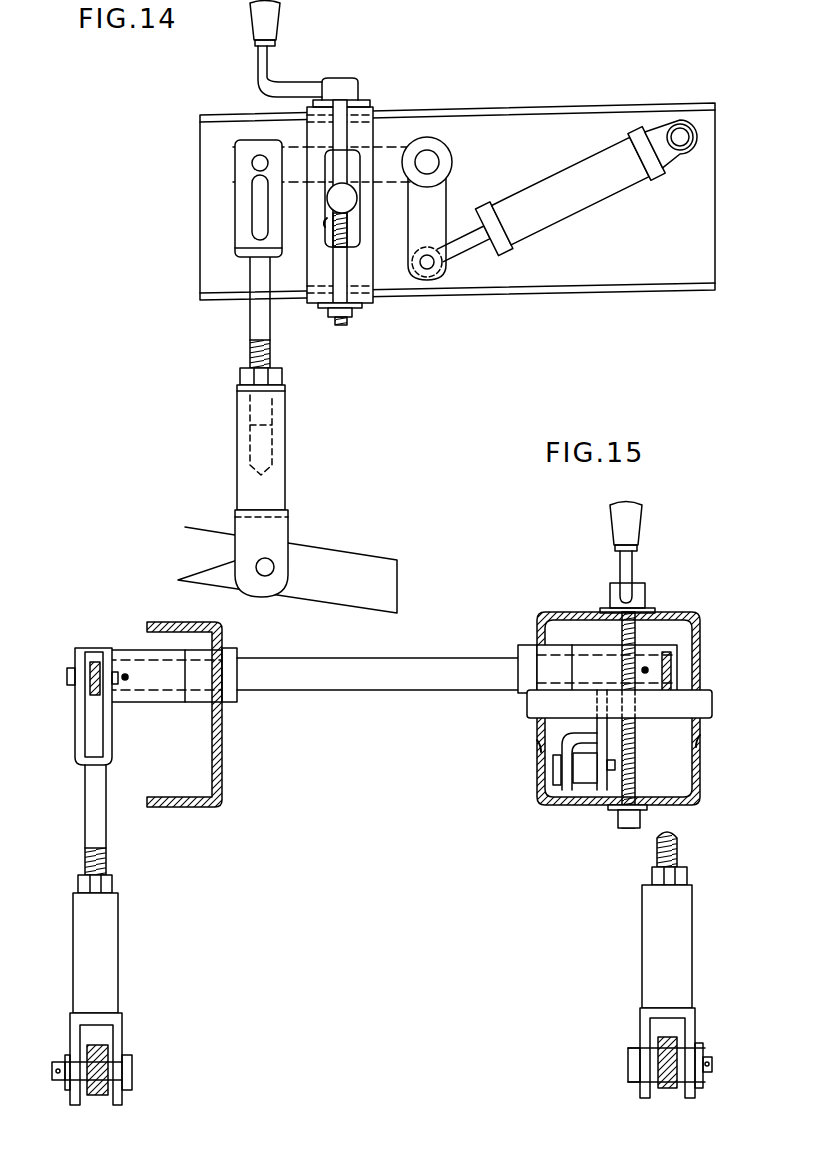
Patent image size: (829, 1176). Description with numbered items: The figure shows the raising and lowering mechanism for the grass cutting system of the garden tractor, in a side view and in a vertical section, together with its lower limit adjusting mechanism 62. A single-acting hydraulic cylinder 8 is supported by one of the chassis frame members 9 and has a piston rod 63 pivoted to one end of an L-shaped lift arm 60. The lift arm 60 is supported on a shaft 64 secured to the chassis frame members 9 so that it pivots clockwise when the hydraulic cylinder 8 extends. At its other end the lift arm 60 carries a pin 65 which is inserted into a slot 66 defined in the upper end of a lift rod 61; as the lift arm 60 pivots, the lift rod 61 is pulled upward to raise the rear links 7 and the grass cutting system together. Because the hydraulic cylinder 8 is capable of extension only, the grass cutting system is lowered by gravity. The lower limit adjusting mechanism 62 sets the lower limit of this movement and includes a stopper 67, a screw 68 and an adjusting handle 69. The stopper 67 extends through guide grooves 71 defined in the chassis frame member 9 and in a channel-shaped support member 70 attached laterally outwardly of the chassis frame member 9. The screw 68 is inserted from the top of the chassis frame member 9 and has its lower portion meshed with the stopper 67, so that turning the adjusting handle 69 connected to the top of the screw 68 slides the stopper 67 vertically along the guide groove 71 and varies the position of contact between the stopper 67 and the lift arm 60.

In FIG. 14, the rear links 7 is at (355, 565).
In FIG. 15, the rear links 7 is at (105, 1048).
In FIG. 14, the hydraulic cylinder 8 is at (605, 200).
In FIG. 14, the chassis frame member 9 is at (535, 105).
In FIG. 15, the chassis frame member 9 is at (225, 772).
In FIG. 14, the lift arm 60 is at (386, 150).
In FIG. 15, the lift arm 60 is at (672, 675).
In FIG. 14, the lift rod 61 is at (250, 325).
In FIG. 15, the lift rod 61 is at (108, 830).
In FIG. 14, the lower limit adjusting mechanism 62 is at (380, 264).
In FIG. 15, the lower limit adjusting mechanism 62 is at (667, 632).
In FIG. 14, the piston rod 63 is at (466, 250).
In FIG. 15, the piston rod 63 is at (583, 775).
In FIG. 14, the shaft 64 is at (432, 160).
In FIG. 15, the shaft 64 is at (380, 683).
In FIG. 14, the pin 65 is at (254, 162).
In FIG. 14, the slot 66 is at (260, 211).
In FIG. 14, the stopper 67 is at (357, 200).
In FIG. 15, the stopper 67 is at (714, 705).
In FIG. 14, the screw 68 is at (352, 233).
In FIG. 15, the screw 68 is at (625, 815).
In FIG. 14, the adjusting handle 69 is at (273, 18).
In FIG. 15, the adjusting handle 69 is at (640, 528).
In FIG. 14, the channel-shaped support member 70 is at (322, 305).
In FIG. 14, the guide grooves 71 is at (325, 222).
In FIG. 15, the guide grooves 71 is at (540, 748).